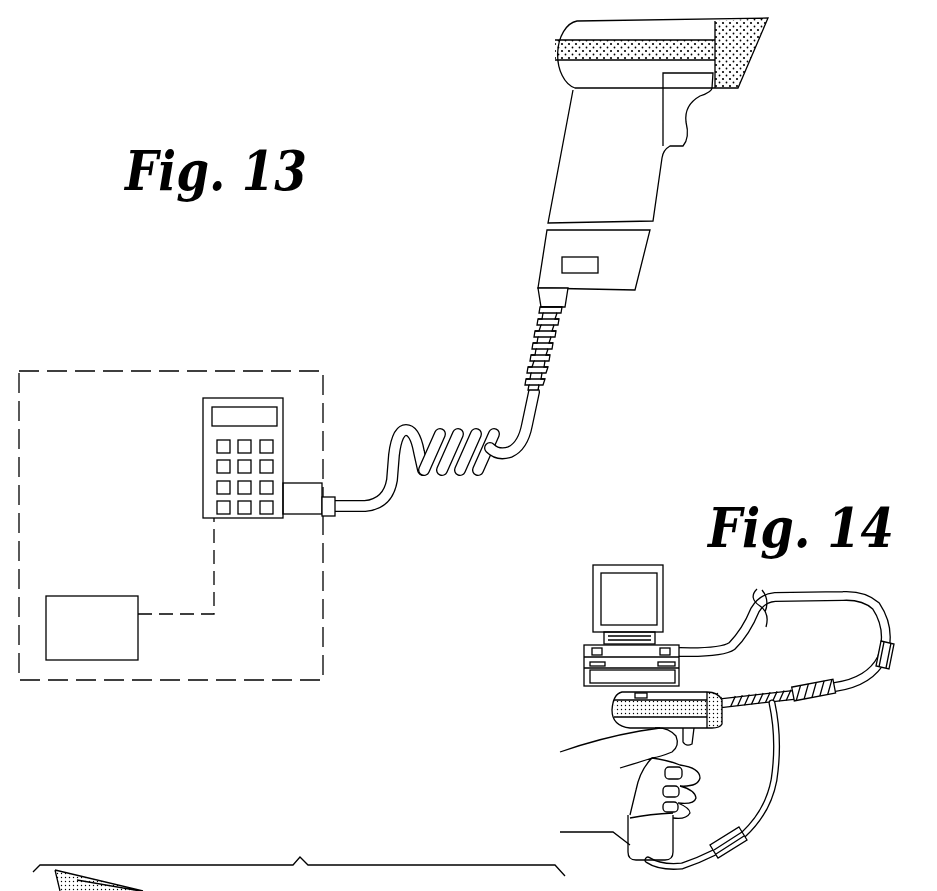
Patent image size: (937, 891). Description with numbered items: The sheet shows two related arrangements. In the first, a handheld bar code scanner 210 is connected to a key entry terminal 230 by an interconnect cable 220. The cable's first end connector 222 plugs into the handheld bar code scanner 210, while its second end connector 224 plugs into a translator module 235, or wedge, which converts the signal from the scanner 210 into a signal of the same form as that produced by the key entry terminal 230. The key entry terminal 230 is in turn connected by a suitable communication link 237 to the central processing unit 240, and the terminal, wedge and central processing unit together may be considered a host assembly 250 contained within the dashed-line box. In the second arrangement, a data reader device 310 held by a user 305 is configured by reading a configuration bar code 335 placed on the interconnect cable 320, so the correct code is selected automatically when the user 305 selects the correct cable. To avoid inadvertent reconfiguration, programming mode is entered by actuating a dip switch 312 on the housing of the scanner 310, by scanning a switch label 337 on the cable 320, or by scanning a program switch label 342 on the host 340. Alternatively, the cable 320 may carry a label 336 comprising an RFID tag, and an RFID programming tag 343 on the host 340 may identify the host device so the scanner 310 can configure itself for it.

In FIG. 13, the handheld bar code scanner 210 is at (592, 133).
In FIG. 13, the first end connector 222 is at (617, 282).
In FIG. 13, the interconnect cable 220 is at (512, 462).
In FIG. 13, the key entry terminal 230 is at (258, 403).
In FIG. 13, the translator module 235 is at (305, 488).
In FIG. 13, the second end connector 224 is at (332, 515).
In FIG. 13, the central processing unit 240 is at (104, 603).
In FIG. 13, the communication link 237 is at (182, 617).
In FIG. 13, the host assembly 250 is at (200, 681).
In FIG. 14, the host 340 is at (598, 612).
In FIG. 14, the RFID programming tag 343 is at (585, 652).
In FIG. 14, the program switch label 342 is at (668, 648).
In FIG. 14, the dip switch 312 is at (638, 697).
In FIG. 14, the data reader device 310 is at (627, 720).
In FIG. 14, the user 305 is at (582, 805).
In FIG. 14, the interconnect cable 320 is at (773, 790).
In FIG. 14, the configuration bar code 335 is at (810, 698).
In FIG. 14, the RFID tag label 336 is at (873, 652).
In FIG. 14, the switch label 337 is at (733, 848).